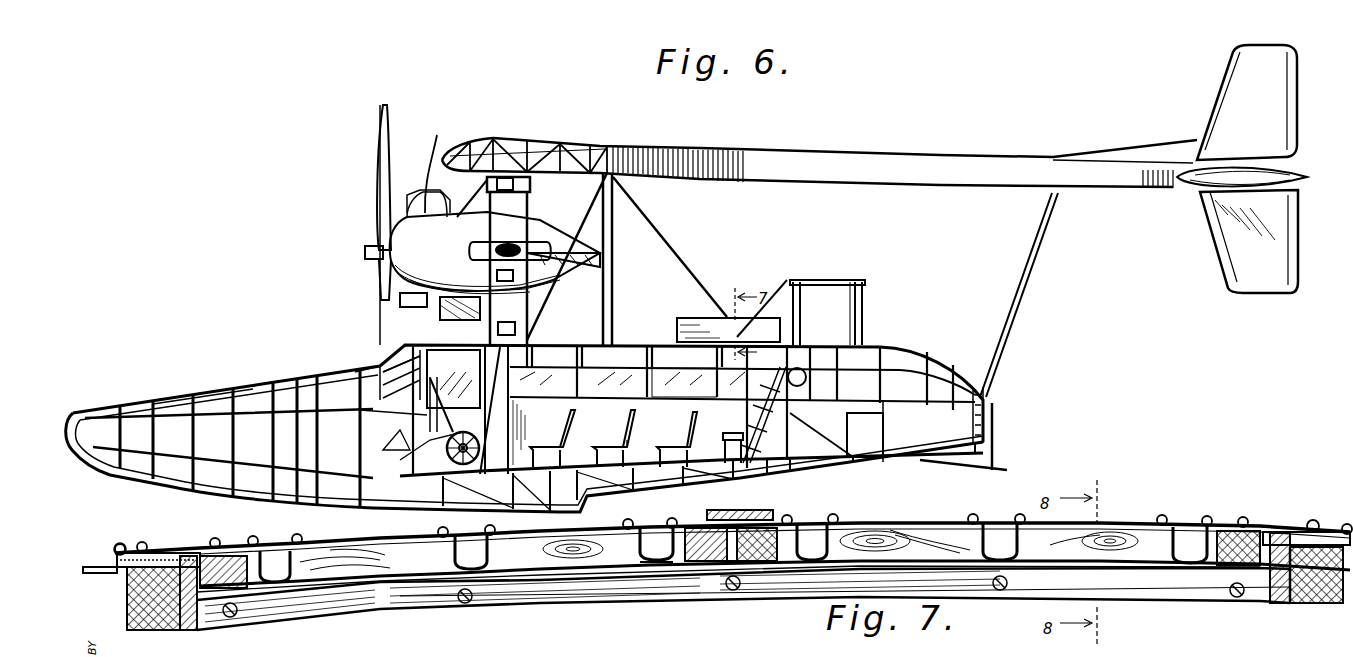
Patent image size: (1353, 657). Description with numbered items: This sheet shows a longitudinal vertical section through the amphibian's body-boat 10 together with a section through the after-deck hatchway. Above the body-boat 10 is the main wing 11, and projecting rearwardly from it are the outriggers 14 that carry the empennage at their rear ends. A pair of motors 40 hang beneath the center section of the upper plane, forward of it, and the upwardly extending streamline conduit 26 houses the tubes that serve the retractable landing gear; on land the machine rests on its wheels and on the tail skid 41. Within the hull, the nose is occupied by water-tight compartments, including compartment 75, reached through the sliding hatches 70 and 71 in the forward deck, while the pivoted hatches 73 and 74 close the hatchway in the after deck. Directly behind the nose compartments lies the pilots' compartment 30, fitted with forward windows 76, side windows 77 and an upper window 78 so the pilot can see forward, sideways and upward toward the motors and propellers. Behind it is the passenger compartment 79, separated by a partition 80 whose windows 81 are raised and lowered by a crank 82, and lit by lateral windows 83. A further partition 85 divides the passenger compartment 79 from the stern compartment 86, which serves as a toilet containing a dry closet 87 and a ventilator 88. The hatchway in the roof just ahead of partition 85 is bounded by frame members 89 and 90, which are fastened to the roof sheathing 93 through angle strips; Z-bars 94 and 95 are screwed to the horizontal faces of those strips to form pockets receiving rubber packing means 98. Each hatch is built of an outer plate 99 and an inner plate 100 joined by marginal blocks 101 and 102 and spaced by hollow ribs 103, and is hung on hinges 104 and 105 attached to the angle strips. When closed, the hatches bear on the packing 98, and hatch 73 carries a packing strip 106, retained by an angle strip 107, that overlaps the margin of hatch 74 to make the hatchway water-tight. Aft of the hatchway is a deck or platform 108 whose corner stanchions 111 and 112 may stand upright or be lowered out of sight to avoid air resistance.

In FIG. 6, the body-boat 10 is at (93, 460).
In FIG. 6, the main wing 11 is at (527, 143).
In FIG. 6, the outriggers 14 is at (882, 157).
In FIG. 6, the streamline conduit 26 is at (527, 320).
In FIG. 6, the pilots' compartment 30 is at (377, 433).
In FIG. 6, the motors 40 is at (402, 201).
In FIG. 6, the tail skid 41 is at (993, 467).
In FIG. 6, the sliding hatch 70 is at (180, 392).
In FIG. 6, the sliding hatch 71 is at (270, 433).
In FIG. 6, the pivoted hatch 73 is at (677, 320).
In FIG. 7, the pivoted hatch 73 is at (937, 533).
In FIG. 6, the pivoted hatch / water-tight compartment 74 is at (207, 423).
In FIG. 7, the pivoted hatch / water-tight compartment 74 is at (403, 613).
In FIG. 6, the water-tight compartment 75 is at (287, 430).
In FIG. 6, the forward windows 76 is at (407, 373).
In FIG. 6, the side windows 77 is at (453, 379).
In FIG. 6, the upper window 78 is at (437, 343).
In FIG. 6, the passenger compartment 79 is at (672, 439).
In FIG. 6, the partition 80 is at (544, 432).
In FIG. 6, the windows 81 is at (640, 421).
In FIG. 6, the crank 82 is at (602, 438).
In FIG. 6, the lateral windows 83 is at (660, 377).
In FIG. 6, the partition 85 is at (821, 435).
In FIG. 6, the stern compartment 86 is at (897, 360).
In FIG. 6, the dry closet 87 is at (867, 437).
In FIG. 6, the ventilator 88 is at (806, 377).
In FIG. 7, the frame member 89 is at (163, 627).
In FIG. 7, the frame member 90 is at (1330, 603).
In FIG. 7, the roof sheathing 93 is at (93, 570).
In FIG. 7, the Z-bar 94 is at (213, 620).
In FIG. 7, the Z-bar 95 is at (1273, 583).
In FIG. 7, the packing means 98 is at (197, 537).
In FIG. 7, the outer plate 99 is at (333, 553).
In FIG. 7, the inner plate 100 is at (333, 613).
In FIG. 7, the marginal block 101 is at (247, 533).
In FIG. 7, the marginal block 102 is at (697, 563).
In FIG. 7, the hollow ribs 103 is at (500, 563).
In FIG. 7, the hinge 104 is at (137, 533).
In FIG. 7, the hinge 105 is at (1343, 530).
In FIG. 7, the packing strip 106 is at (710, 515).
In FIG. 7, the angle strip 107 is at (753, 510).
In FIG. 7, the deck or platform 108 is at (287, 593).
In FIG. 6, the stanchion 111 is at (793, 312).
In FIG. 6, the stanchion 112 is at (862, 297).